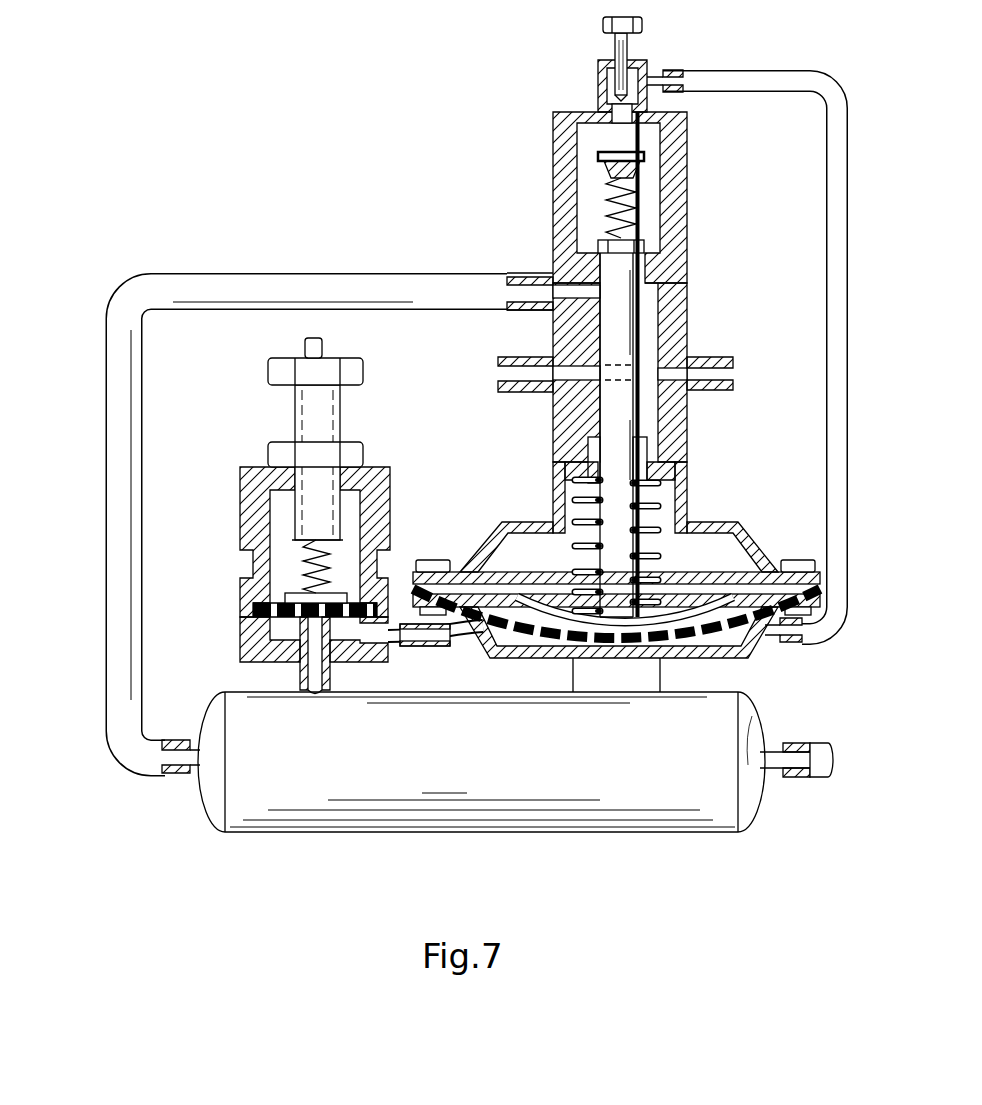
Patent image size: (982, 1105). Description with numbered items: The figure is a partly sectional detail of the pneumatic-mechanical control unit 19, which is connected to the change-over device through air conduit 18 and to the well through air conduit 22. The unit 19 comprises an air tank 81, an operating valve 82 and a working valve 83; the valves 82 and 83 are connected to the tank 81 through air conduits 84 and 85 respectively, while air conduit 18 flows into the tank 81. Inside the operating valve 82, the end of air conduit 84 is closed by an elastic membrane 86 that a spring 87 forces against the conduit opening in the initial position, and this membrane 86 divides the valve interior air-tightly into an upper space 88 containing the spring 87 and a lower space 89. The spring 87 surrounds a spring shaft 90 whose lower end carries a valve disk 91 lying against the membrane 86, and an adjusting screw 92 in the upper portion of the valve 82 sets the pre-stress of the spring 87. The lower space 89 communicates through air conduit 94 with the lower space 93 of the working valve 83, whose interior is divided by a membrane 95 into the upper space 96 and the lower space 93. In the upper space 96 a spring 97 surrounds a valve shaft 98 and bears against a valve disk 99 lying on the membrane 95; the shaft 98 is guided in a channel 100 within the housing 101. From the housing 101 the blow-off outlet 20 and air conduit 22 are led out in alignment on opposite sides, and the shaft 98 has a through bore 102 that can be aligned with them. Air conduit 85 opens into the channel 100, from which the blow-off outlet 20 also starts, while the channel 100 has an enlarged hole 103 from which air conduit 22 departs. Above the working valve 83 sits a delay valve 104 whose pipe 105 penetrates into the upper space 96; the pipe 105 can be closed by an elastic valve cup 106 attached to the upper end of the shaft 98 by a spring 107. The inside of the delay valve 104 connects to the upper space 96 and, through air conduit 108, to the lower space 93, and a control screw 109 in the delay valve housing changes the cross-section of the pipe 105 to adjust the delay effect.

The air conduit 18 is at (818, 760).
The pneumatic-mechanical control unit 19 is at (610, 352).
The blow-off outlet 20 is at (498, 373).
The air conduit 22 is at (710, 378).
The air tank 81 is at (425, 825).
The operating valve 82 is at (335, 508).
The working valve 83 is at (540, 491).
The air conduit 84 is at (318, 690).
The air conduit 85 is at (398, 290).
The membrane 86 is at (262, 610).
The spring 87 is at (300, 560).
The upper space 88 is at (280, 503).
The lower space 89 is at (275, 650).
The spring shaft 90 is at (315, 350).
The valve disk 91 is at (290, 598).
The adjusting screw 92 is at (280, 372).
The lower space 93 is at (740, 650).
The air conduit 94 is at (420, 648).
The membrane 95 is at (497, 600).
The upper space 96 is at (735, 548).
The spring 97 is at (655, 480).
The valve shaft 98 is at (645, 440).
The valve disk 99 is at (700, 605).
The channel 100 is at (600, 330).
The housing 101 is at (672, 205).
The through bore 102 is at (610, 385).
The enlarged hole 103 is at (668, 310).
The delay valve 104 is at (648, 50).
The pipe 105 is at (640, 132).
The valve cup 106 is at (598, 165).
The spring 107 is at (620, 212).
The air conduit 108 is at (825, 302).
The control screw 109 is at (603, 25).